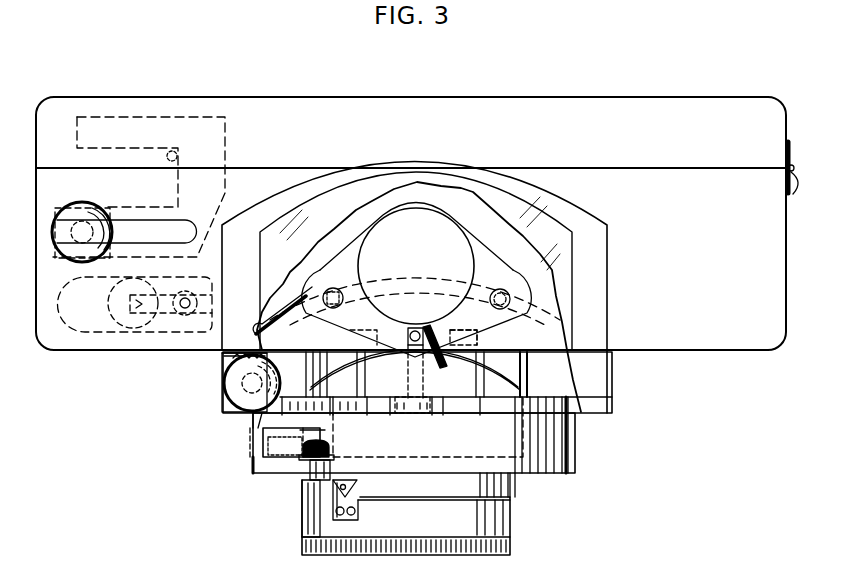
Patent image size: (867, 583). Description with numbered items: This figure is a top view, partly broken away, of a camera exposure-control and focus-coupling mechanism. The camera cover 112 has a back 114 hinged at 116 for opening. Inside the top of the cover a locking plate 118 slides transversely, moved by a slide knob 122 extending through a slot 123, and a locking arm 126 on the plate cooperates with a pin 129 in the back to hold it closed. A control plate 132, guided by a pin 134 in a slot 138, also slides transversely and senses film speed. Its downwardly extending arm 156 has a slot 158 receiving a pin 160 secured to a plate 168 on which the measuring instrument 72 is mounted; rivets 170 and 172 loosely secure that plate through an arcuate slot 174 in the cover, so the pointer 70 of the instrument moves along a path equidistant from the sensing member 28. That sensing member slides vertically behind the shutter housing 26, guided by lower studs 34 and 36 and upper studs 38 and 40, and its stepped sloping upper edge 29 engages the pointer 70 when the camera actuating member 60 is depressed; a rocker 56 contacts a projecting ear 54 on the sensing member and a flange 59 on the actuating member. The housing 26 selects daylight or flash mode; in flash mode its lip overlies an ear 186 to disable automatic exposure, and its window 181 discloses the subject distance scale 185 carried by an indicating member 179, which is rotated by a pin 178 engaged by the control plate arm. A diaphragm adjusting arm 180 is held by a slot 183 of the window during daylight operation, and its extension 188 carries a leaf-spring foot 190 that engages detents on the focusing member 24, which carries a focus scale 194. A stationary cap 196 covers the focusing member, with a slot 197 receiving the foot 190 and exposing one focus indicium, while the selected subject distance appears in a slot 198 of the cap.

The focusing member 24 is at (510, 546).
The shutter housing 26 is at (575, 462).
The sensing member 28 is at (372, 397).
The sloping upper edge 29 is at (463, 393).
The lower stud 34 is at (345, 356).
The lower stud 36 is at (526, 353).
The upper stud 38 is at (300, 326).
The upper stud 40 is at (534, 365).
The projecting ear 54 is at (397, 387).
The rocker 56 is at (258, 413).
The flange 59 is at (223, 391).
The camera actuating member 60 is at (222, 374).
The pointer 70 is at (446, 342).
The measuring instrument 72 is at (394, 262).
The camera cover 112 is at (669, 248).
The back 114 is at (647, 148).
The hinge 116 is at (785, 198).
The locking plate 118 is at (165, 257).
The slide knob 122 is at (80, 204).
The slot 123 is at (136, 216).
The locking arm 126 is at (128, 115).
The pin 129 is at (175, 150).
The control plate 132 is at (147, 330).
The pin 134 is at (185, 316).
The slot 138 is at (133, 310).
The downwardly extending arm 156 is at (372, 342).
The slot 158 is at (411, 328).
The pin 160 is at (432, 326).
The plate 168 is at (476, 242).
The rivet 170 is at (330, 288).
The rivet 172 is at (505, 289).
The arcuate slot 174 is at (283, 318).
The pin 178 is at (423, 410).
The indicating member 179 is at (326, 425).
The diaphragm adjusting arm 180 is at (331, 450).
The window 181 is at (262, 433).
The slot 183 is at (333, 460).
The subject distance scale 185 is at (265, 463).
The ear 186 is at (442, 410).
The extension 188 is at (307, 478).
The leaf-spring foot 190 is at (333, 488).
The focus scale 194 is at (347, 512).
The stationary cap 196 is at (302, 525).
The slot 197 is at (480, 498).
The slot 198 is at (360, 500).